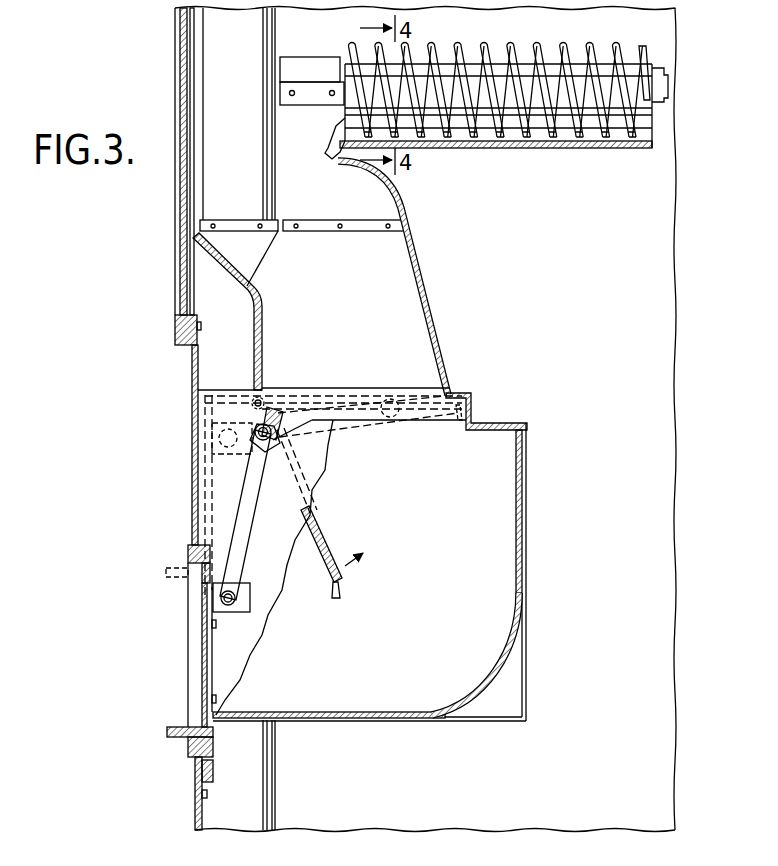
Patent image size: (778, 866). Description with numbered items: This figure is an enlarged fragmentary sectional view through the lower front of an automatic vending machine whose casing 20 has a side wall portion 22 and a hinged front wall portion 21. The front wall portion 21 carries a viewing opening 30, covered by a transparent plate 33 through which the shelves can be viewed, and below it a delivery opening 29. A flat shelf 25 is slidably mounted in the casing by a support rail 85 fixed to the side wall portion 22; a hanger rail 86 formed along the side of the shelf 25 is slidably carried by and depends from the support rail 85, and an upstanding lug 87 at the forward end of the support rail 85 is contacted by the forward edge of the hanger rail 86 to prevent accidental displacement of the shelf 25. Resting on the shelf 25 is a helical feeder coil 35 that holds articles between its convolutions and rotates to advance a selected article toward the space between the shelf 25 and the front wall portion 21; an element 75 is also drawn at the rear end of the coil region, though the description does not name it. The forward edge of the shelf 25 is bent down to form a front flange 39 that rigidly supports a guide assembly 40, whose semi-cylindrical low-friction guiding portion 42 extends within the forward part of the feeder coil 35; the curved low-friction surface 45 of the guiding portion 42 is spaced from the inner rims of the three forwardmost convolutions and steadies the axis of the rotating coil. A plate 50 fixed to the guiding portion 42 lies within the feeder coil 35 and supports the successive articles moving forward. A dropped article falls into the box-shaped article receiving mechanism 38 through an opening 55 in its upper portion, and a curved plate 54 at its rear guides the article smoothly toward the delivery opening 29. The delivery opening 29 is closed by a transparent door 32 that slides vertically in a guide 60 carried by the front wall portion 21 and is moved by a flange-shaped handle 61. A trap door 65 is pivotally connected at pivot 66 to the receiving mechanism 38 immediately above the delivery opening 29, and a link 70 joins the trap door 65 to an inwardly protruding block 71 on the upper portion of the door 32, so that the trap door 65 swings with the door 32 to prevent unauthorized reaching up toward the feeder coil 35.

The casing 20 is at (677, 667).
The side wall portion 22 is at (677, 305).
The transparent plate 33 is at (182, 88).
The viewing opening 30 is at (180, 316).
The front wall portion 21 is at (192, 398).
The upstanding lug 87 is at (312, 62).
The support rail 85 is at (286, 93).
The drive shaft 75 is at (648, 123).
The shelf 25 is at (612, 149).
The hanger rail 86 is at (466, 62).
The helical feeder coil 35 is at (648, 47).
The guiding portion 42 is at (427, 117).
The curved low-friction surface 45 is at (403, 130).
The plate 50 is at (535, 140).
The guide assembly 40 is at (330, 140).
The front flange 39 is at (336, 162).
The opening 55 is at (452, 393).
The article receiving mechanism 38 is at (525, 519).
The curved plate 54 is at (505, 632).
The pivotal connection 66 is at (256, 402).
The link 70 is at (356, 420).
The block 71 is at (277, 609).
The trap door 65 is at (458, 418).
The flange-shaped handle 61 is at (178, 580).
The transparent door 32 is at (197, 648).
The guide 60 is at (213, 690).
The delivery opening 29 is at (195, 727).